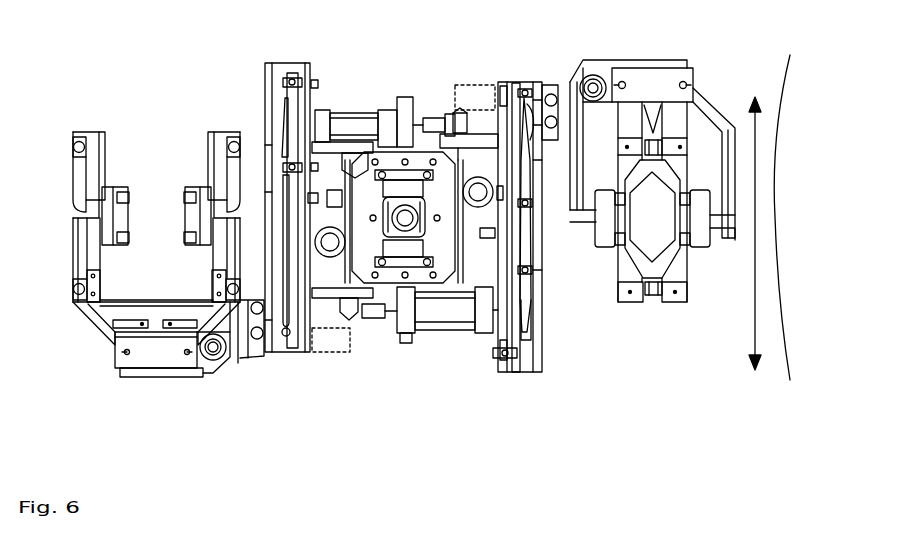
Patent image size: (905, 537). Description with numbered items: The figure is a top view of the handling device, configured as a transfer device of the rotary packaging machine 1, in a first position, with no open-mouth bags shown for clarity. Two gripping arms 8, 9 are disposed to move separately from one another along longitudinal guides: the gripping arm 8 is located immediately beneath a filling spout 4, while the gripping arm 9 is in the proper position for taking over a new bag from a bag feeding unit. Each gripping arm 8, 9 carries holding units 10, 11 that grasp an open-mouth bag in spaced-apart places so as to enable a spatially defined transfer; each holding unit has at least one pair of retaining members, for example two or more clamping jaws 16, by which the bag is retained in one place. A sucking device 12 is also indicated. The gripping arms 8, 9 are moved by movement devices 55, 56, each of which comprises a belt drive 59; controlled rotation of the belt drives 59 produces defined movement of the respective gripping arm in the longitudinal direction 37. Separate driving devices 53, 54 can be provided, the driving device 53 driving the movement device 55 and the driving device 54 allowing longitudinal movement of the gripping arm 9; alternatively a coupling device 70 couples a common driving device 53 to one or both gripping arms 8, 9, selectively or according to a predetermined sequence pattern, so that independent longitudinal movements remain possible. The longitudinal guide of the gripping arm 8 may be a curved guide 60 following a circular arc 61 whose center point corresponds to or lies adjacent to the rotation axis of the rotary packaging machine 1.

The rotary packaging machine 1 is at (788, 62).
The filling spout 4 is at (665, 250).
The gripping arm 8 is at (587, 55).
The gripping arm 9 is at (213, 381).
The holding unit 10 is at (207, 132).
The holding unit 11 is at (200, 286).
The sucking device 12 is at (177, 236).
The clamping jaw 16 is at (67, 142).
The longitudinal direction 37 is at (755, 258).
The driving device 53 is at (484, 92).
The driving device 54 is at (332, 344).
The movement device 55 is at (515, 83).
The movement device 56 is at (292, 63).
The belt drive 59 is at (292, 353).
The curved guide 60 is at (530, 332).
The circular arc 61 is at (530, 320).
The coupling device 70 is at (384, 197).